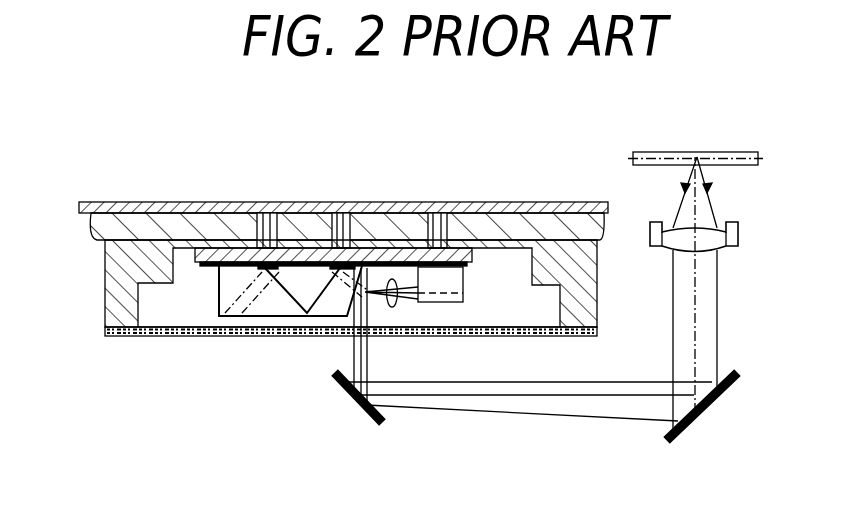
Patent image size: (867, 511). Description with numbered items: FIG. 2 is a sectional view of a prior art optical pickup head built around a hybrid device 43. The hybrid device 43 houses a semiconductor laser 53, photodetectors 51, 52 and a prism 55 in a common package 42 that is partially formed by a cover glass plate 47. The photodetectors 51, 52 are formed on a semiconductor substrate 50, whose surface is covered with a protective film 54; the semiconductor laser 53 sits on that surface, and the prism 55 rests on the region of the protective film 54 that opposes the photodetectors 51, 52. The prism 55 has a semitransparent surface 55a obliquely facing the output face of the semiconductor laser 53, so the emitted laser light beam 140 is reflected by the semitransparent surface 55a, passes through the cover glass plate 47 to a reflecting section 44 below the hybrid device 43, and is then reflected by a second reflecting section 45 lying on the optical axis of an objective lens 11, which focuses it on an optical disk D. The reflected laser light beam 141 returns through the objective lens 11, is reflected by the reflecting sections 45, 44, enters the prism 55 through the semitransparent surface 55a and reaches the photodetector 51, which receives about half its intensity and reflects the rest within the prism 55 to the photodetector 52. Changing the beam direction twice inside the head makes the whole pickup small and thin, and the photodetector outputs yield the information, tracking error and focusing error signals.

The optical disk D is at (684, 152).
The objective lens 11 is at (685, 232).
The reflected laser light beam 141 is at (715, 208).
The common package 42 is at (115, 304).
The hybrid device 43 is at (530, 302).
The reflecting section 44 is at (337, 386).
The reflecting section 45 is at (665, 437).
The cover glass plate 47 is at (170, 337).
The semiconductor substrate 50 is at (463, 240).
The photodetector 51 is at (360, 240).
The photodetector 52 is at (250, 240).
The semiconductor laser 53 is at (447, 302).
The protective film 54 is at (199, 266).
The prism 55 is at (270, 308).
The semitransparent surface 55a is at (372, 248).
The laser light beam 140 is at (393, 307).